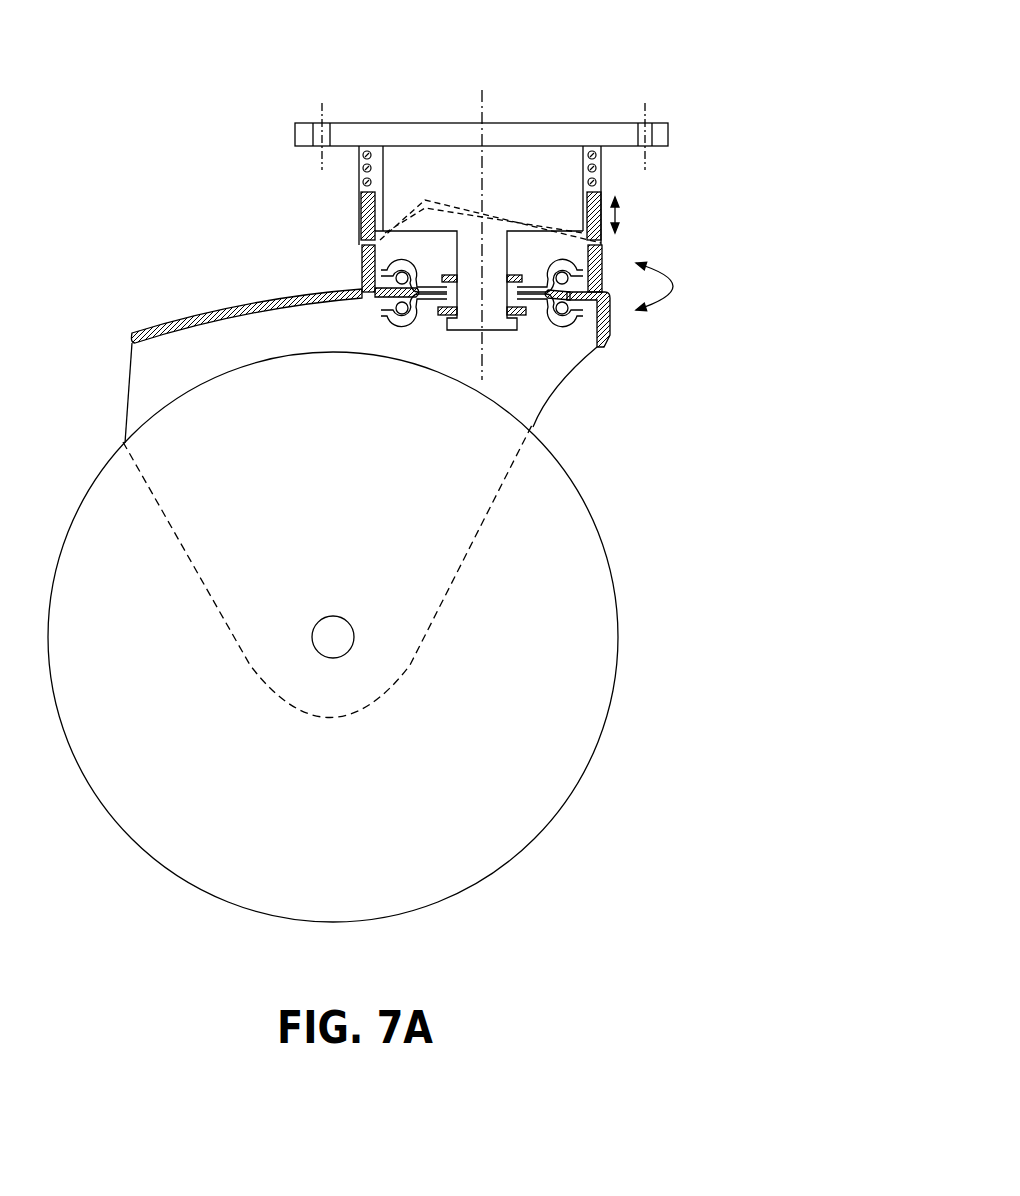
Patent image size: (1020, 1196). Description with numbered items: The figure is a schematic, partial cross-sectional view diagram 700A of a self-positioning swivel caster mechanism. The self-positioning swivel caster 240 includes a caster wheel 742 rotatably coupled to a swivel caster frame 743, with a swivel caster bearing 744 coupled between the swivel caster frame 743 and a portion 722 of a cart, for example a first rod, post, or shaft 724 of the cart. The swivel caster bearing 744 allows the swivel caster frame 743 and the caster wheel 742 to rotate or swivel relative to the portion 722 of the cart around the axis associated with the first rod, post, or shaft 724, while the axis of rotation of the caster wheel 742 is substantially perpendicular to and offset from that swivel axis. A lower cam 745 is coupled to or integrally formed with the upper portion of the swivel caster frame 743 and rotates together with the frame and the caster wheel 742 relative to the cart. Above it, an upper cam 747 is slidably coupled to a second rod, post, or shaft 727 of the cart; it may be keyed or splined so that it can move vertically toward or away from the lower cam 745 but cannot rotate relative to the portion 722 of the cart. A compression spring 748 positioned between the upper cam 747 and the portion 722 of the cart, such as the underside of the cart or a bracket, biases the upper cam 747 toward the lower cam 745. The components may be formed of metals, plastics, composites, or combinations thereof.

The schematic partial cross-sectional view diagram 700A is at (732, 48).
The self-positioning swivel caster 240 is at (185, 195).
The portion of a cart 722 is at (533, 123).
The second rod, post, or shaft 727 is at (385, 165).
The compression spring 748 is at (598, 170).
The upper cam 747 is at (602, 192).
The lower cam 745 is at (602, 257).
The swivel caster bearing 744 is at (563, 327).
The first rod, post, or shaft 724 is at (498, 330).
The swivel caster frame 743 is at (215, 312).
The caster wheel 742 is at (314, 825).